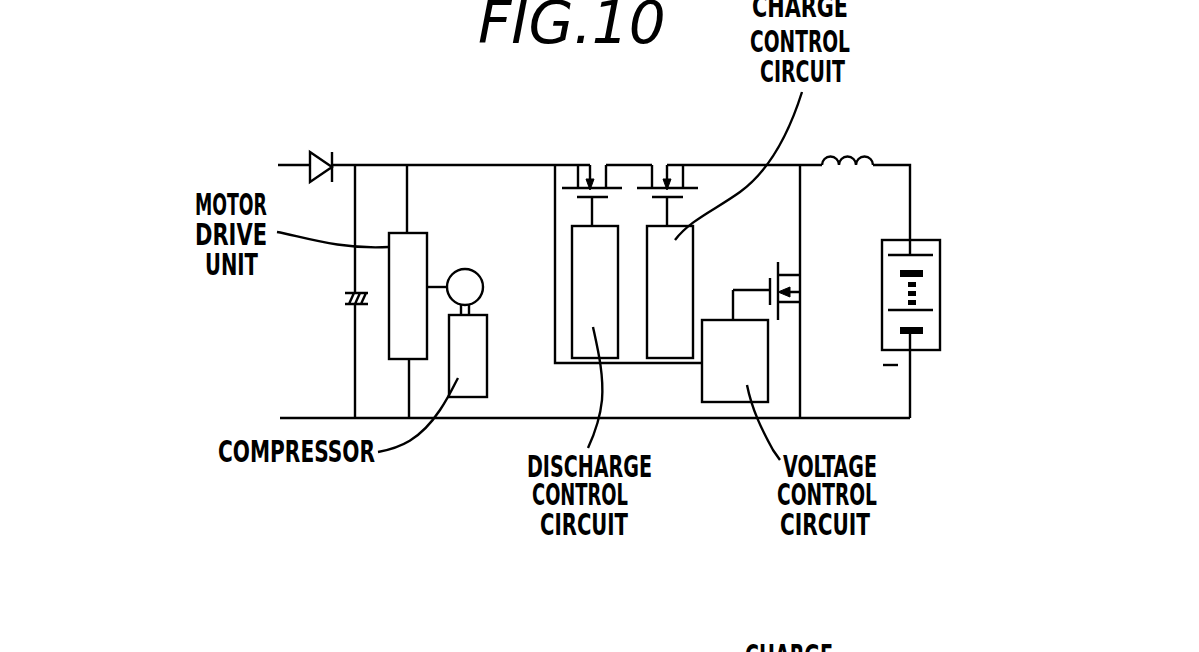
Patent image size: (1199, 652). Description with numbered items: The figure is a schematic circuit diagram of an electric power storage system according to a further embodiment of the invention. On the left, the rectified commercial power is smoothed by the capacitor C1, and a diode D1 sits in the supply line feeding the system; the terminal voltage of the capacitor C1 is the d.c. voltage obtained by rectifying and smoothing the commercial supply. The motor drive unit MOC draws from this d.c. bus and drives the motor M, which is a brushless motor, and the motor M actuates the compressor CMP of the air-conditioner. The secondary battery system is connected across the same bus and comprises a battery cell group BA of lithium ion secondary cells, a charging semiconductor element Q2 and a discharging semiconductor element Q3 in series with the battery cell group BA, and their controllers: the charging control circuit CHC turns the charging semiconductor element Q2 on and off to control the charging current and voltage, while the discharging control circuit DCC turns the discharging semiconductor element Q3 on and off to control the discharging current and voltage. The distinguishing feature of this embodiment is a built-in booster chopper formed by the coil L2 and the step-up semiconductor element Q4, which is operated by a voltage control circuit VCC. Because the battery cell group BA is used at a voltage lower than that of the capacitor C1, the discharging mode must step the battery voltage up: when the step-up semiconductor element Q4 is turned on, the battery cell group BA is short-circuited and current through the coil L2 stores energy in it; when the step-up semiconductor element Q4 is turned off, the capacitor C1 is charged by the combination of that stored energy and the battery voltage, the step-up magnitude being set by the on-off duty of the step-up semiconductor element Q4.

The diode D1 is at (310, 156).
The capacitor C1 is at (345, 298).
The motor drive unit MOC is at (416, 229).
The motor M is at (483, 287).
The compressor CMP is at (487, 362).
The discharging semiconductor element Q3 is at (591, 164).
The charging semiconductor element Q2 is at (672, 162).
The discharging control circuit DCC is at (572, 250).
The charging control circuit CHC is at (722, 252).
The step-up semiconductor element Q4 is at (802, 302).
The voltage control circuit VCC is at (768, 390).
The coil L2 is at (853, 150).
The battery cell group BA is at (943, 302).